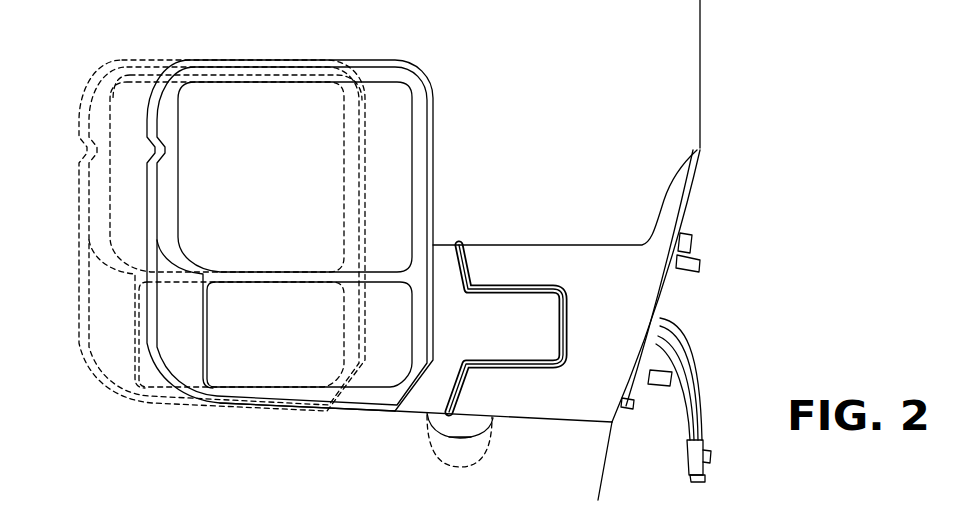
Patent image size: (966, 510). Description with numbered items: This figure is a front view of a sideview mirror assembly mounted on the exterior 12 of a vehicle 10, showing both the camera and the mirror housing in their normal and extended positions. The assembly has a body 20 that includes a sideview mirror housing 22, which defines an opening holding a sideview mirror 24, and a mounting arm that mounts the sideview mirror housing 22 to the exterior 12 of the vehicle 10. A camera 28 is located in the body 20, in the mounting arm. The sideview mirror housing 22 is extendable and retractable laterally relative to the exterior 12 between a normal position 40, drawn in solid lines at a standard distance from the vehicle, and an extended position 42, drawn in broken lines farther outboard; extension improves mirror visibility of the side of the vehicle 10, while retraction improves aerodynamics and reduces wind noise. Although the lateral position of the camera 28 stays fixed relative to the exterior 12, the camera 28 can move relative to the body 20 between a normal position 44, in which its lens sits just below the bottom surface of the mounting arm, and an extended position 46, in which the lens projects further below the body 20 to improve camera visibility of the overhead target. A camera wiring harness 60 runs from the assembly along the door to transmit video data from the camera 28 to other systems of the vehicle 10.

The vehicle 10 is at (700, 42).
The exterior 12 is at (700, 120).
The body 20 is at (428, 99).
The sideview mirror housing 22 is at (435, 143).
The sideview mirror 24 is at (397, 203).
The camera 28 is at (457, 440).
The normal position 40 is at (352, 412).
The extended position 42 is at (170, 403).
The normal position 44 is at (470, 423).
The extended position 46 is at (432, 450).
The camera wiring harness 60 is at (698, 377).